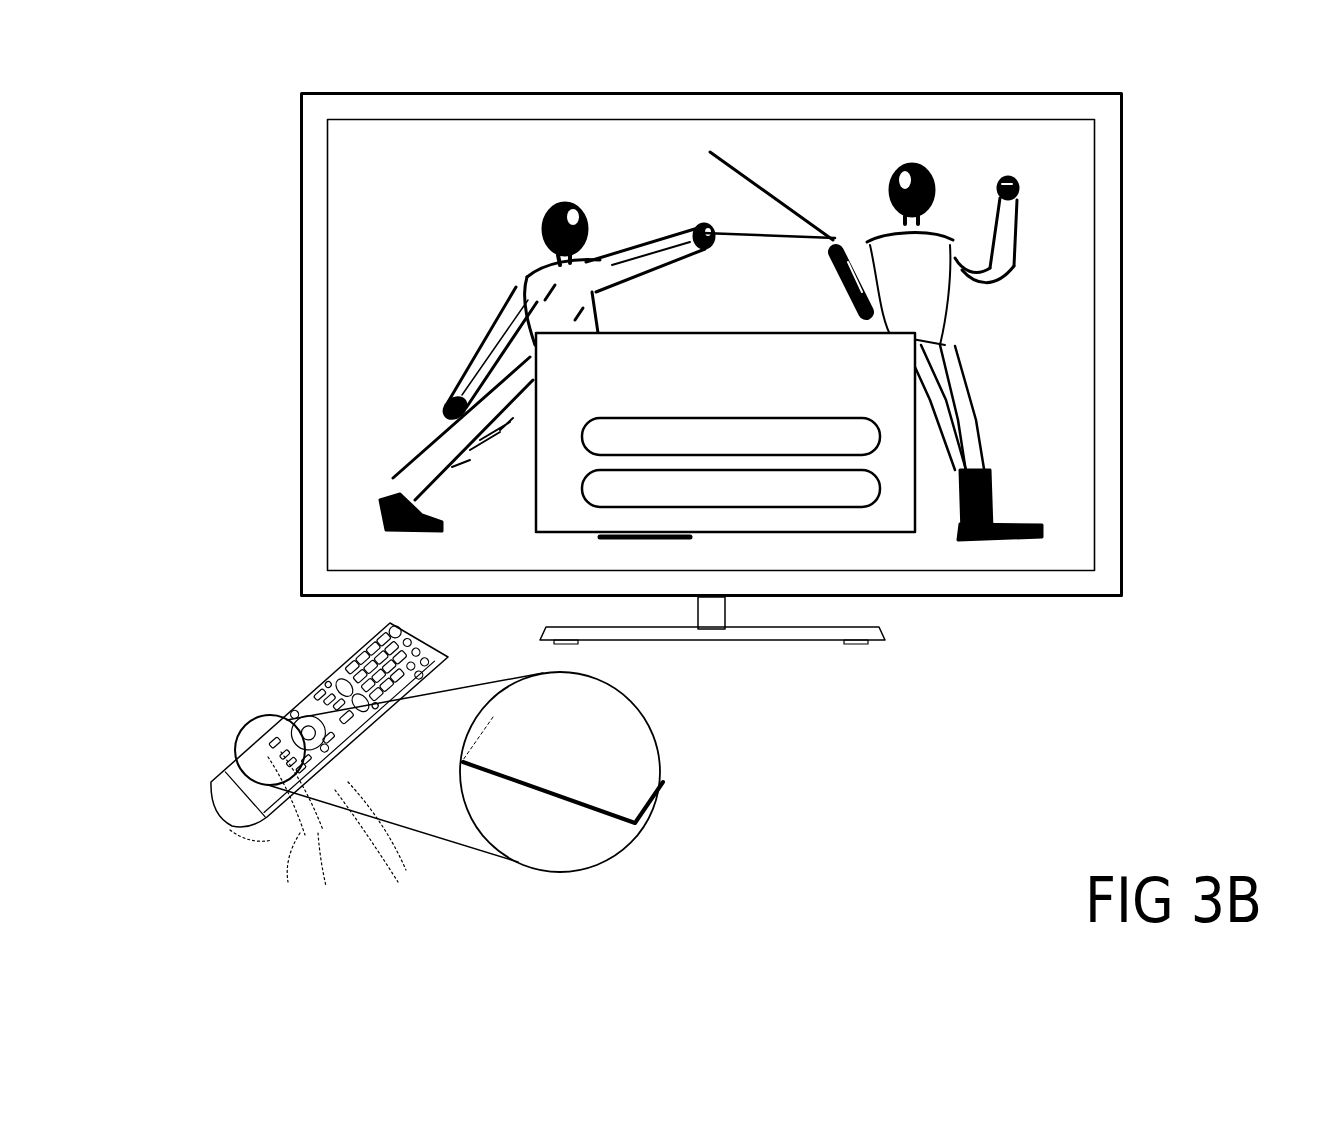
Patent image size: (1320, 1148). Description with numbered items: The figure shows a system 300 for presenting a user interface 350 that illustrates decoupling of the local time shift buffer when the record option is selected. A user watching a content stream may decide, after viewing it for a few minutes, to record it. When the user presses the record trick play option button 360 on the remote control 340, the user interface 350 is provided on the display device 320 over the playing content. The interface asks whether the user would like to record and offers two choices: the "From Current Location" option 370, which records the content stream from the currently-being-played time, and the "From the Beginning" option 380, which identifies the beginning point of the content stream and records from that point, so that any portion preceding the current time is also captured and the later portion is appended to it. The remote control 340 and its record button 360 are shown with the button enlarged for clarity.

The system 300 is at (1213, 133).
The display device 320 is at (1090, 257).
The remote control 340 is at (268, 720).
The user interface 350 is at (883, 373).
The record trick play option button 360 is at (268, 747).
The "From Current Location" option 370 is at (880, 428).
The "From the Beginning" option 380 is at (880, 482).